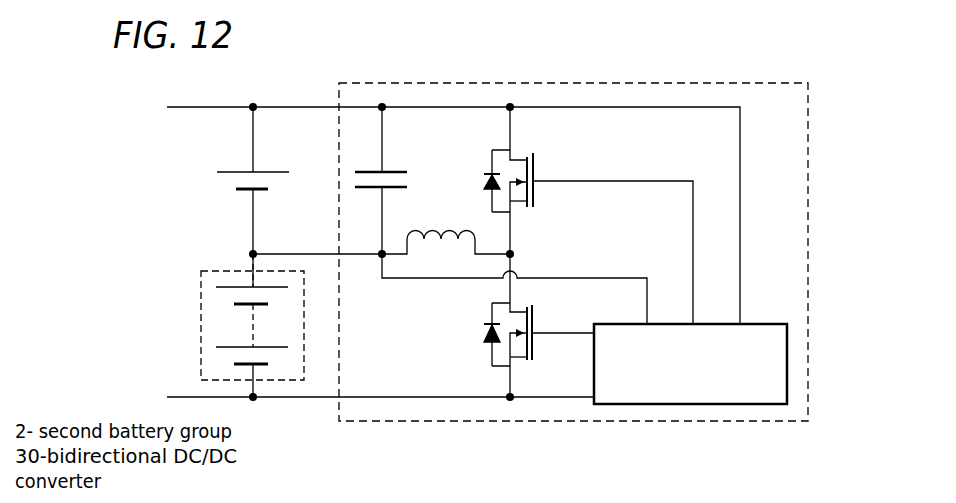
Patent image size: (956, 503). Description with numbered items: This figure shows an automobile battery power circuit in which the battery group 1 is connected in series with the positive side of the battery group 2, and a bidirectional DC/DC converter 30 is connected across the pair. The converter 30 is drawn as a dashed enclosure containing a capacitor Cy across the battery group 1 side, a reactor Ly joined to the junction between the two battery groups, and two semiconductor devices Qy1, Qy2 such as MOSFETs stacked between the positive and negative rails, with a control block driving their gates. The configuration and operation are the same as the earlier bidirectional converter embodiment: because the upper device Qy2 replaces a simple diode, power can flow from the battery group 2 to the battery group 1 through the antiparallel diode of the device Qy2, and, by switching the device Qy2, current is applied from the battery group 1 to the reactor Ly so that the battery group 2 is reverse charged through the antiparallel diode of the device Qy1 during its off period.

The battery group 1 is at (231, 171).
The battery group 2 is at (217, 269).
The bidirectional DC/DC converter 30 is at (808, 113).
The capacitor Cy is at (384, 180).
The reactor Ly is at (446, 226).
The semiconductor device Qy1 is at (518, 325).
The semiconductor device Qy2 is at (588, 215).